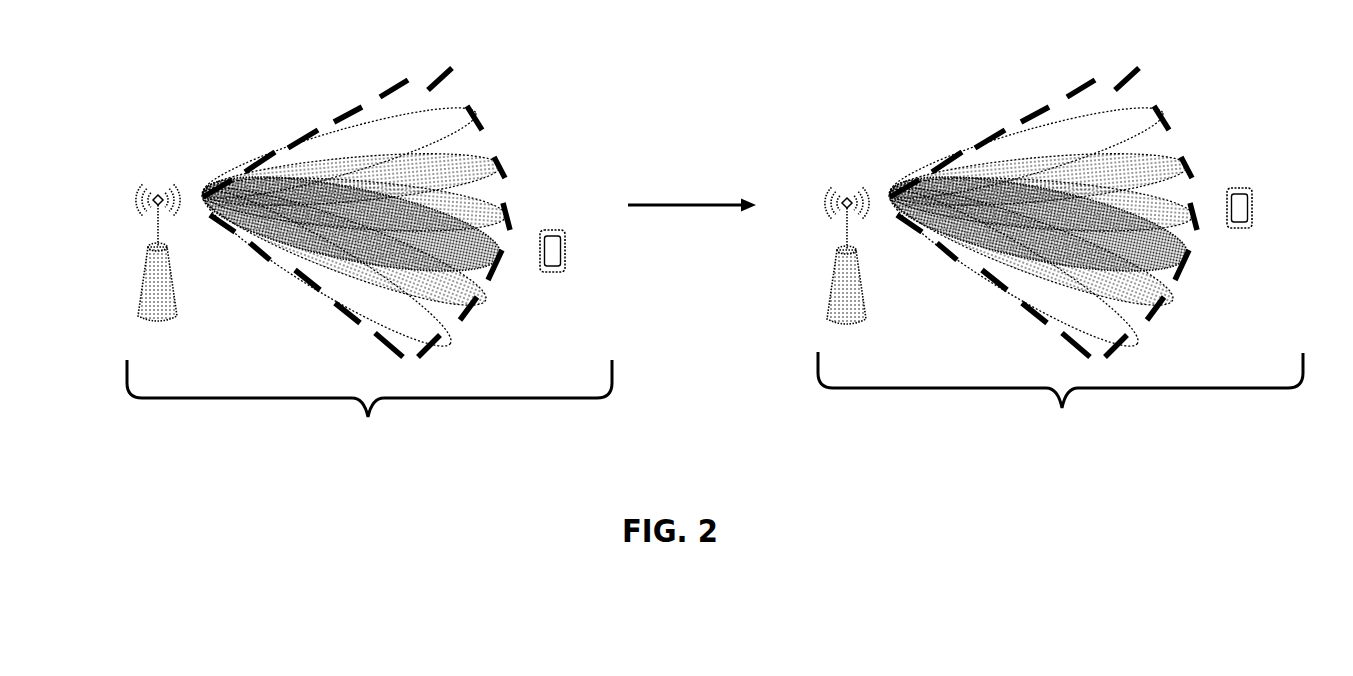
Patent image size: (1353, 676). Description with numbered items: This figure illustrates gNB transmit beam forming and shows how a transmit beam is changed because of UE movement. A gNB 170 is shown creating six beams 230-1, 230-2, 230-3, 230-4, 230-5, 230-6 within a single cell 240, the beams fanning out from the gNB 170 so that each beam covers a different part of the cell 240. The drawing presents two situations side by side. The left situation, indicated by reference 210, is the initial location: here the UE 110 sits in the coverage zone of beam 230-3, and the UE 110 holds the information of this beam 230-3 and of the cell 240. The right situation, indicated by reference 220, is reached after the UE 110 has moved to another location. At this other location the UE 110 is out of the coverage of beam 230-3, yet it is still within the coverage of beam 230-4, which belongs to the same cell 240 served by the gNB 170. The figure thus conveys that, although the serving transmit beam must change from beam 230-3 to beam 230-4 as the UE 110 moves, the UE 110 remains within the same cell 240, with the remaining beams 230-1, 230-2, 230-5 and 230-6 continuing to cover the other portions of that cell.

The UE 110 is at (588, 254).
The gNB 170 is at (130, 152).
The initial location 210 is at (369, 413).
The another location 220 is at (1060, 402).
The beam 230-1 is at (432, 343).
The beam 230-2 is at (478, 305).
The beam 230-3 is at (500, 252).
The beam 230-4 is at (503, 207).
The beam 230-5 is at (498, 162).
The beam 230-6 is at (473, 107).
The cell 240 is at (305, 133).